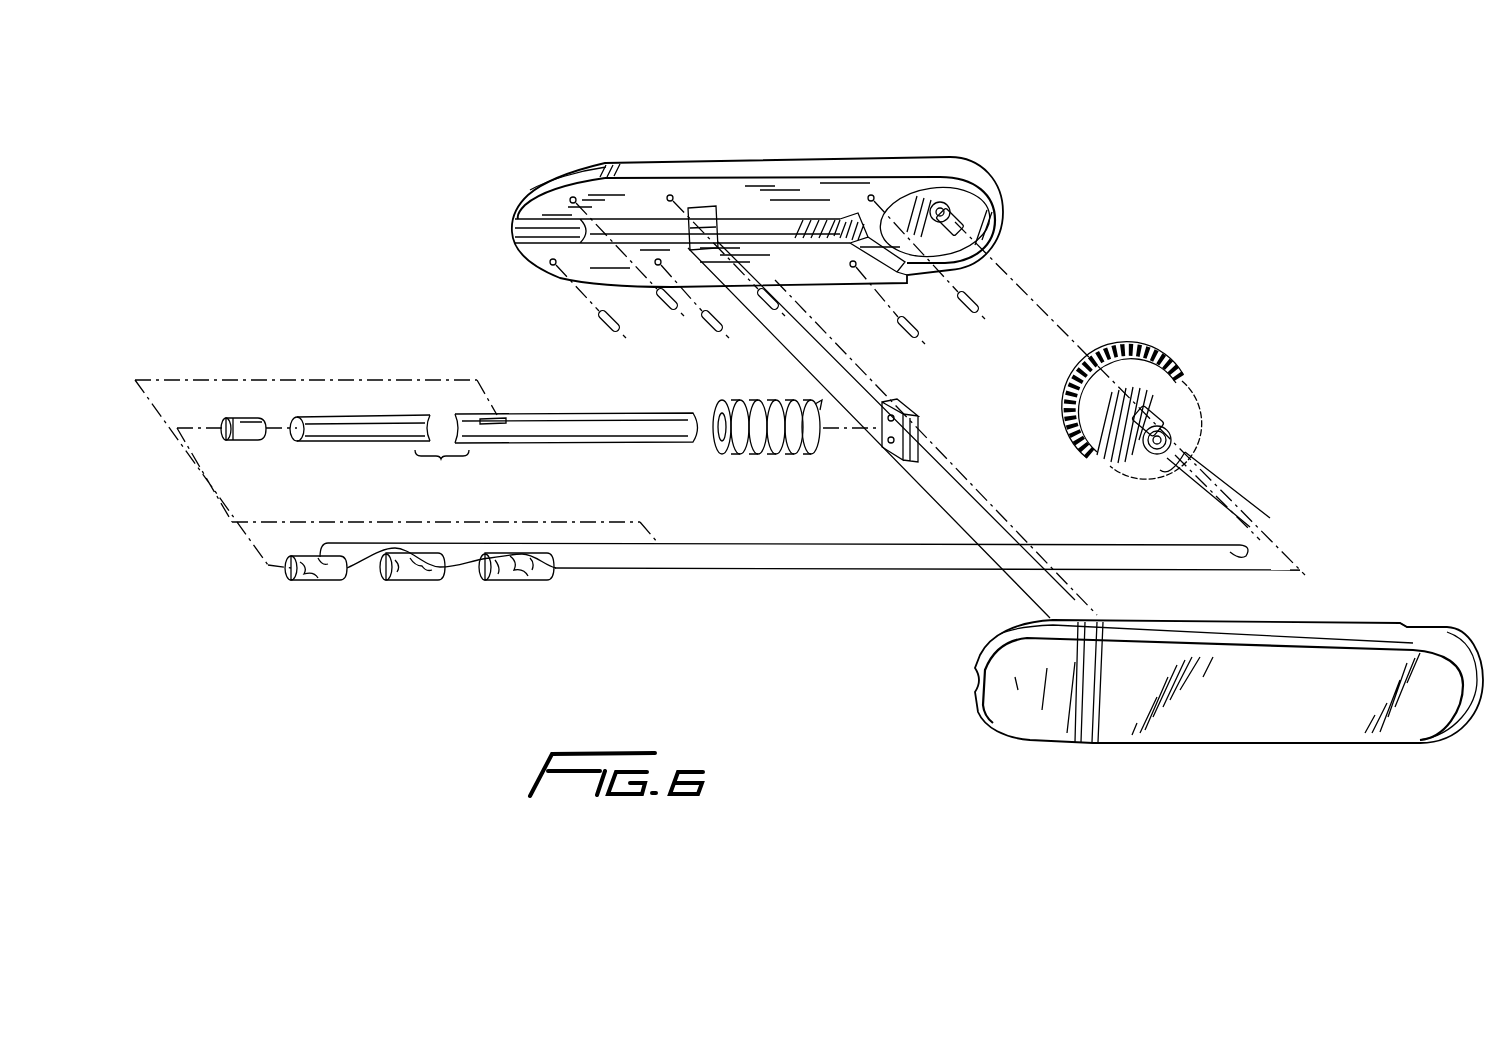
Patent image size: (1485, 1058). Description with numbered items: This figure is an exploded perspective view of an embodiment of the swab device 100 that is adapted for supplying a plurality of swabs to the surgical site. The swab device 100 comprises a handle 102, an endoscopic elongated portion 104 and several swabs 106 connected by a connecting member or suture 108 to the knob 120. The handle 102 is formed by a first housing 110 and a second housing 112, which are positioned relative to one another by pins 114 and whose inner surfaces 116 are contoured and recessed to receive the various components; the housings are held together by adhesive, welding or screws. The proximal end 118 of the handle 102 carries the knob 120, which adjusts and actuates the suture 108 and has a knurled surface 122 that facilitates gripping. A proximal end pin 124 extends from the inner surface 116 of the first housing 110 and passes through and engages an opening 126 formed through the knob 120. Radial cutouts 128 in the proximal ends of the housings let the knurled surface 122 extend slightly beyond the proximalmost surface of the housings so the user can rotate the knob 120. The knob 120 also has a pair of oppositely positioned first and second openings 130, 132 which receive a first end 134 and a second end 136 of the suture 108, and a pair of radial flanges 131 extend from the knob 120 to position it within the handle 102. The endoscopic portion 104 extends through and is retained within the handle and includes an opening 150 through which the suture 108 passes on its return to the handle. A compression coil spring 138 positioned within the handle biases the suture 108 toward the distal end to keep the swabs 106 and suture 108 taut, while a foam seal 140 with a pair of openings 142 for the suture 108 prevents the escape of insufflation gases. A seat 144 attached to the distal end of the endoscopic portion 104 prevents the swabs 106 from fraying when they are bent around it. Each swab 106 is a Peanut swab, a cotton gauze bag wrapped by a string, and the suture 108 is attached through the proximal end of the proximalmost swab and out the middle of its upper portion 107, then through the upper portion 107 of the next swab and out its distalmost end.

The swab device 100 is at (546, 157).
The handle 102 is at (973, 368).
The endoscopic elongated portion 104 is at (375, 418).
The swab 106 is at (520, 582).
The upper portion 107 is at (520, 553).
The suture 108 is at (708, 545).
The first housing 110 is at (798, 163).
The second housing 112 is at (1037, 717).
The pins 114 is at (607, 333).
The inner surfaces 116 is at (650, 165).
The proximal end 118 is at (1003, 214).
The knob 120 is at (1169, 422).
The knurled surface 122 is at (1160, 365).
The proximal end pin 124 is at (936, 202).
The opening 126 is at (1172, 442).
The radial cutouts 128 is at (968, 196).
The first opening 130 is at (1147, 410).
The radial flanges 131 is at (1118, 400).
The second opening 132 is at (1137, 480).
The first end 134 is at (1300, 570).
The second end 136 is at (1226, 548).
The spring 138 is at (790, 408).
The foam seal 140 is at (915, 438).
The openings 142 is at (887, 452).
The seat 144 is at (238, 418).
The opening 150 is at (495, 418).